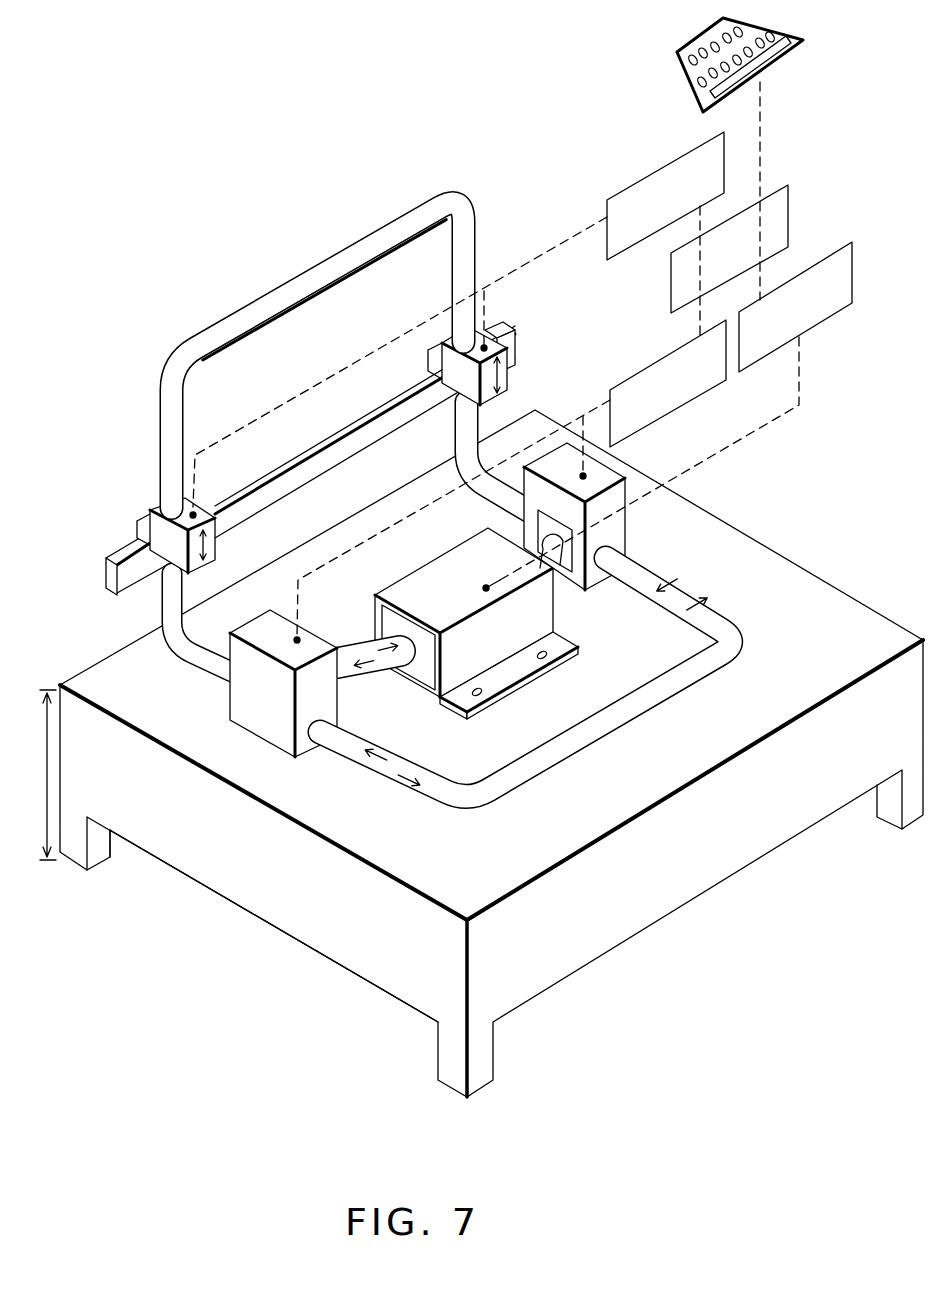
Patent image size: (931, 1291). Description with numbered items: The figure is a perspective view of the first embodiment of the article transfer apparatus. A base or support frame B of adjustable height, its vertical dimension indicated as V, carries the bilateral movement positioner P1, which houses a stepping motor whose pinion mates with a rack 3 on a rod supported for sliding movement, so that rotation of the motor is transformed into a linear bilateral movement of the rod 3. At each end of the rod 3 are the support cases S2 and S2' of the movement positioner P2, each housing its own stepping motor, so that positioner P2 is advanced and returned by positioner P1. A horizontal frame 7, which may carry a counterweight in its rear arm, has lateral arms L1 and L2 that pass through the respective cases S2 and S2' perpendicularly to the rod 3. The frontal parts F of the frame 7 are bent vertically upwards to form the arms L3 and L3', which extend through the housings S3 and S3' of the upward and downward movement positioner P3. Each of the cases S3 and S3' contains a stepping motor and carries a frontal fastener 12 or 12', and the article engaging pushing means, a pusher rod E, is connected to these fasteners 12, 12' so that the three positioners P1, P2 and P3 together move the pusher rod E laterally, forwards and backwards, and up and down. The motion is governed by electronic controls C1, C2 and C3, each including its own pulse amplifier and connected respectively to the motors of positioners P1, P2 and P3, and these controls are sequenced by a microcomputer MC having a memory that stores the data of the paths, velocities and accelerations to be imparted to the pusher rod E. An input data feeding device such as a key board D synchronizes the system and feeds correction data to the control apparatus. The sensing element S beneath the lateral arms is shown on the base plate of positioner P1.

The base or support frame B is at (310, 935).
The vertical height of base V is at (43, 775).
The pusher rod E is at (351, 448).
The frontal fastener 12 is at (112, 554).
The frontal fastener 12' is at (446, 350).
The upward and downward movement positioner P3 is at (210, 477).
The movement positioner P2 is at (510, 528).
The support case S3 is at (211, 535).
The support case S3' is at (504, 366).
The frontal parts F is at (317, 355).
The arm L3 is at (288, 355).
The arm L3' is at (499, 282).
The sensing head S is at (420, 688).
The bilateral movement positioner P1 is at (538, 690).
The rack 3 is at (358, 675).
The support case S2 is at (283, 698).
The support case S2' is at (576, 538).
The lateral arm L1 is at (350, 758).
The lateral arm L2 is at (697, 591).
The horizontal frame 7 is at (625, 735).
The electronic control C3 is at (665, 196).
The microcomputer MC is at (729, 249).
The electronic control C1 is at (795, 307).
The electronic control C2 is at (668, 383).
The key board D is at (805, 42).